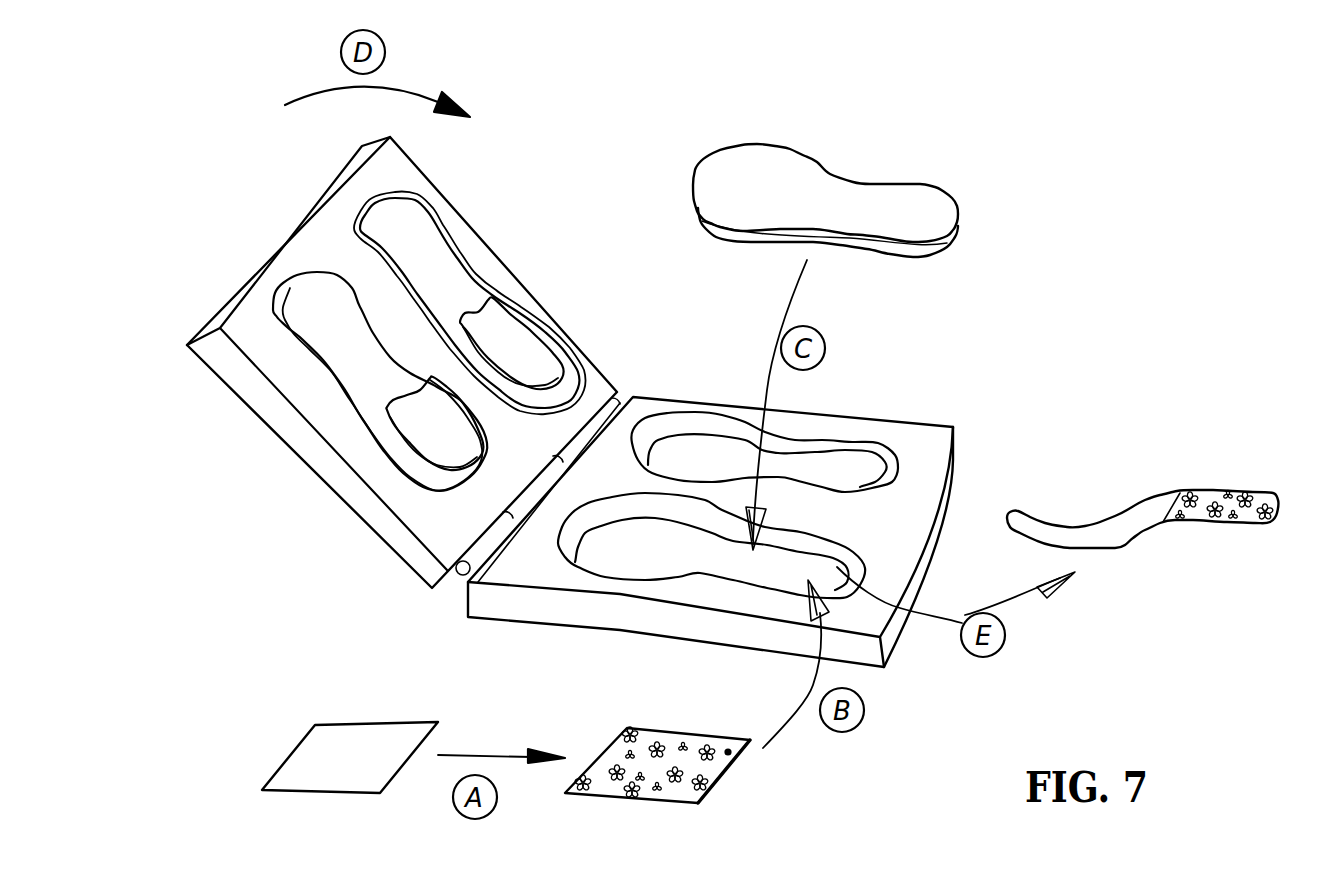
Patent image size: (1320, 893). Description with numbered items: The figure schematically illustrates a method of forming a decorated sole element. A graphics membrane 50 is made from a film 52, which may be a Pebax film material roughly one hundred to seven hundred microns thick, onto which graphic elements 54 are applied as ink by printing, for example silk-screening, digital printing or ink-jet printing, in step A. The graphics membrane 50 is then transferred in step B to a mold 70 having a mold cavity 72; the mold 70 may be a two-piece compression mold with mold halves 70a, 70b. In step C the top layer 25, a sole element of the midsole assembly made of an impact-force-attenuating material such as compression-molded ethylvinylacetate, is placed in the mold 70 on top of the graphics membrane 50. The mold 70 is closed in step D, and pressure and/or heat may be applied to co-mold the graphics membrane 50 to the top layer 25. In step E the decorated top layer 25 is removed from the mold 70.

The top layer 25 is at (830, 170).
The graphics membrane 50 is at (727, 775).
The film 52 is at (340, 723).
The graphics element 54 is at (680, 790).
The mold 70 is at (652, 392).
The mold half 70a is at (718, 395).
The mold half 70b is at (492, 247).
The mold cavity 72 is at (860, 468).